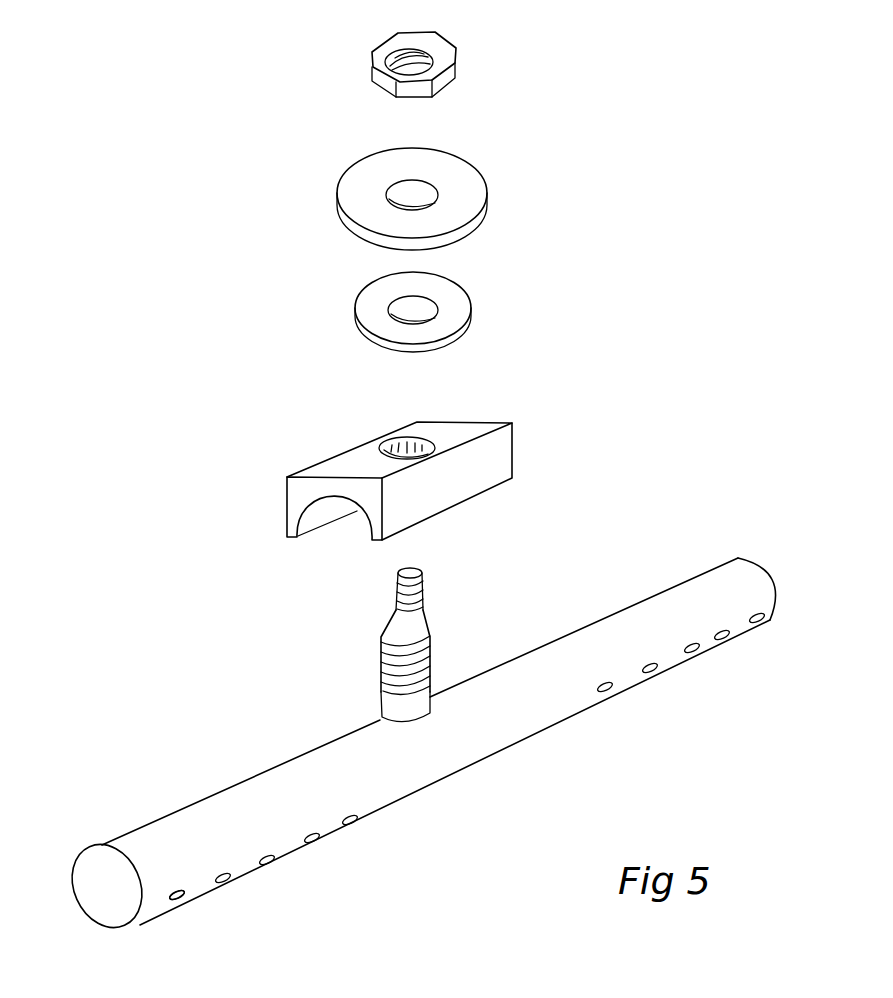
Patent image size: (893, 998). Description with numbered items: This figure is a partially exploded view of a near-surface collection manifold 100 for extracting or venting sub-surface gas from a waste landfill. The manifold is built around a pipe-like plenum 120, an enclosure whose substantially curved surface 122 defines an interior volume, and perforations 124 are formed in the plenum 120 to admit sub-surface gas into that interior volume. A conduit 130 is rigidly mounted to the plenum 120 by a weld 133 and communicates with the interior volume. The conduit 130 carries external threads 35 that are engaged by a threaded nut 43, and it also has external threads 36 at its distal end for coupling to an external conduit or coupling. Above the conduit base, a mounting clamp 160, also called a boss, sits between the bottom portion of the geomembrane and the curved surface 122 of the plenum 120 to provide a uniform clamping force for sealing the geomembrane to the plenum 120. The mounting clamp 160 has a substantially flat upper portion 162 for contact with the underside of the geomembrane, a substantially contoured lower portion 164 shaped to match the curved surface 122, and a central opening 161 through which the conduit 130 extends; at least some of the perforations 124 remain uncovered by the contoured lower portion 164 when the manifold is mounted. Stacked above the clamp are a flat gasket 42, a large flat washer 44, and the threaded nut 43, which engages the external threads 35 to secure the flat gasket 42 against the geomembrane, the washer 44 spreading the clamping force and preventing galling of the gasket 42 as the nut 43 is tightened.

The near-surface collection manifold 100 is at (112, 110).
The threaded nut 43 is at (446, 55).
The large flat washer 44 is at (470, 192).
The flat gasket 42 is at (462, 308).
The mounting clamp 160 is at (377, 487).
The central opening 161 is at (398, 440).
The substantially flat upper portion 162 is at (470, 432).
The substantially contoured lower portion 164 is at (322, 513).
The external threads 36 is at (423, 587).
The external threads 35 is at (430, 657).
The conduit 130 is at (376, 695).
The perforations 124 is at (605, 688).
The substantially curved surface 122 is at (150, 837).
The weld 133 is at (426, 722).
The pipe-like plenum 120 is at (417, 773).